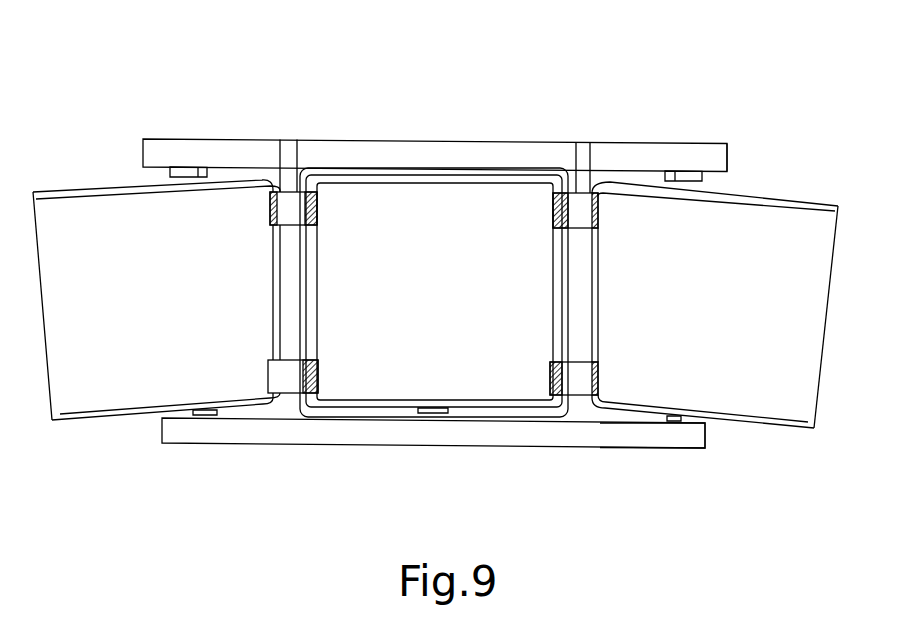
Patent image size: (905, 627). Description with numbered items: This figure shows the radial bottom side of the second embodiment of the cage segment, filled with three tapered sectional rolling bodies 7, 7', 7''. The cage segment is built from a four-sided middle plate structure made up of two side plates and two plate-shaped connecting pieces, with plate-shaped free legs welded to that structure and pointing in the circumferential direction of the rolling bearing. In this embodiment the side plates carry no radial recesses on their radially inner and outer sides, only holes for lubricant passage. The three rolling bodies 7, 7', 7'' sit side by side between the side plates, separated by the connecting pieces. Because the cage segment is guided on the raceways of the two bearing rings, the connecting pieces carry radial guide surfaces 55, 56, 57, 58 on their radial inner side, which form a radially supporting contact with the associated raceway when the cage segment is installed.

The tapered sectional rolling body 7 is at (435, 291).
The tapered sectional rolling body 7' is at (103, 306).
The tapered sectional rolling body 7'' is at (765, 317).
The radial guide surface 55 is at (292, 200).
The radial guide surface 56 is at (290, 376).
The radial guide surface 57 is at (578, 208).
The radial guide surface 58 is at (572, 382).